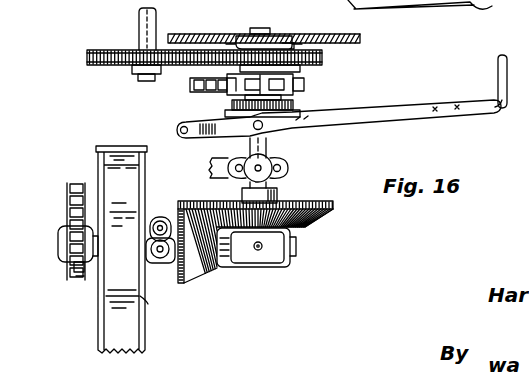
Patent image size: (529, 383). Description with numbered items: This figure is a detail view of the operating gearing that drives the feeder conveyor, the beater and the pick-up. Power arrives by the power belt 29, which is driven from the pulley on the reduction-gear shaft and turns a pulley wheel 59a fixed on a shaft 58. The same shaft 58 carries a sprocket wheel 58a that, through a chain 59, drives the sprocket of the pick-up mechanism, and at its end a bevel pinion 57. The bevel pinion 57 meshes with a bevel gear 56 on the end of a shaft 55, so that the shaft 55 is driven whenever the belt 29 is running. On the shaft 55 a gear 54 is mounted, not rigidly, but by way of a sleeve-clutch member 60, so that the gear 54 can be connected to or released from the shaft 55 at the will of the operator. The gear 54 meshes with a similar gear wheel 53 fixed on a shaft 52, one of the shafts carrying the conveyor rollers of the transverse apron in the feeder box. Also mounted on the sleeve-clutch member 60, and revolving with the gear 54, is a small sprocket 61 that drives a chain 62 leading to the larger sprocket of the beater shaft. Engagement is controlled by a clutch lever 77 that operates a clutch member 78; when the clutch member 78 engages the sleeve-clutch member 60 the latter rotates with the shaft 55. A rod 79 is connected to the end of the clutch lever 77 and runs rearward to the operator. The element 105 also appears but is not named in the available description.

The power belt 29 is at (138, 350).
The shaft 52 is at (150, 82).
The gear wheel 53 is at (138, 47).
The gear 54 is at (160, 18).
The shaft 55 is at (271, 14).
The bevel gear 56 is at (313, 203).
The bevel pinion 57 is at (190, 283).
The shaft 58 is at (63, 243).
The sprocket wheel 58a is at (85, 287).
The chain 59 is at (66, 198).
The pulley wheel 59a is at (140, 300).
The sleeve-clutch member 60 is at (296, 114).
The small sprocket 61 is at (300, 77).
The chain 62 is at (206, 92).
The clutch lever 77 is at (407, 108).
The clutch member 78 is at (295, 111).
The rod 79 is at (500, 78).
The chain 105 is at (482, 6).